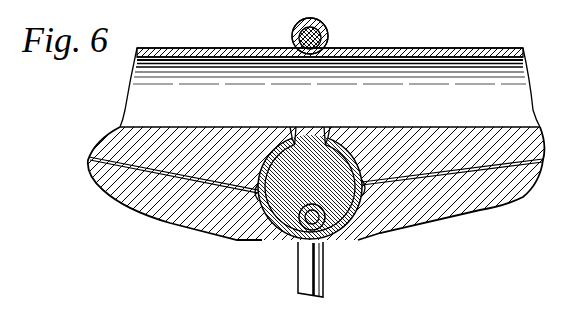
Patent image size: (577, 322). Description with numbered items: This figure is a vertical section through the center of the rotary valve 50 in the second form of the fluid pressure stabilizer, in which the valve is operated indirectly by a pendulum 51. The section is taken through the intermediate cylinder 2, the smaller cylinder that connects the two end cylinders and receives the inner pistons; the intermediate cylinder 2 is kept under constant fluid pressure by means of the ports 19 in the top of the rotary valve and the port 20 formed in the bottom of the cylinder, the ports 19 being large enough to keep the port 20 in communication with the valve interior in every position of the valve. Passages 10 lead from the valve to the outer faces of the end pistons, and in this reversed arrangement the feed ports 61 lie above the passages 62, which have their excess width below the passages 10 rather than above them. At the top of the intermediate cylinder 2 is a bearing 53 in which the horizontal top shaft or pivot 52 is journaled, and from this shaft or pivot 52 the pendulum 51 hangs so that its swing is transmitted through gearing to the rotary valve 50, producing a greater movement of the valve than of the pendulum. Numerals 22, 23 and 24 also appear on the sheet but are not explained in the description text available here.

The intermediate cylinder 2 is at (498, 50).
The passages 10 is at (217, 180).
The ports 19 is at (294, 143).
The port 20 is at (317, 128).
The layer 22 is at (432, 4).
The layer 23 is at (342, 6).
The layer 24 is at (200, 9).
The rotary valve 50 is at (327, 240).
The pendulum 51 is at (307, 280).
The top shaft or pivot 52 is at (330, 40).
The bearing 53 is at (272, 25).
The feed ports 61 is at (355, 167).
The passages 62 is at (253, 238).